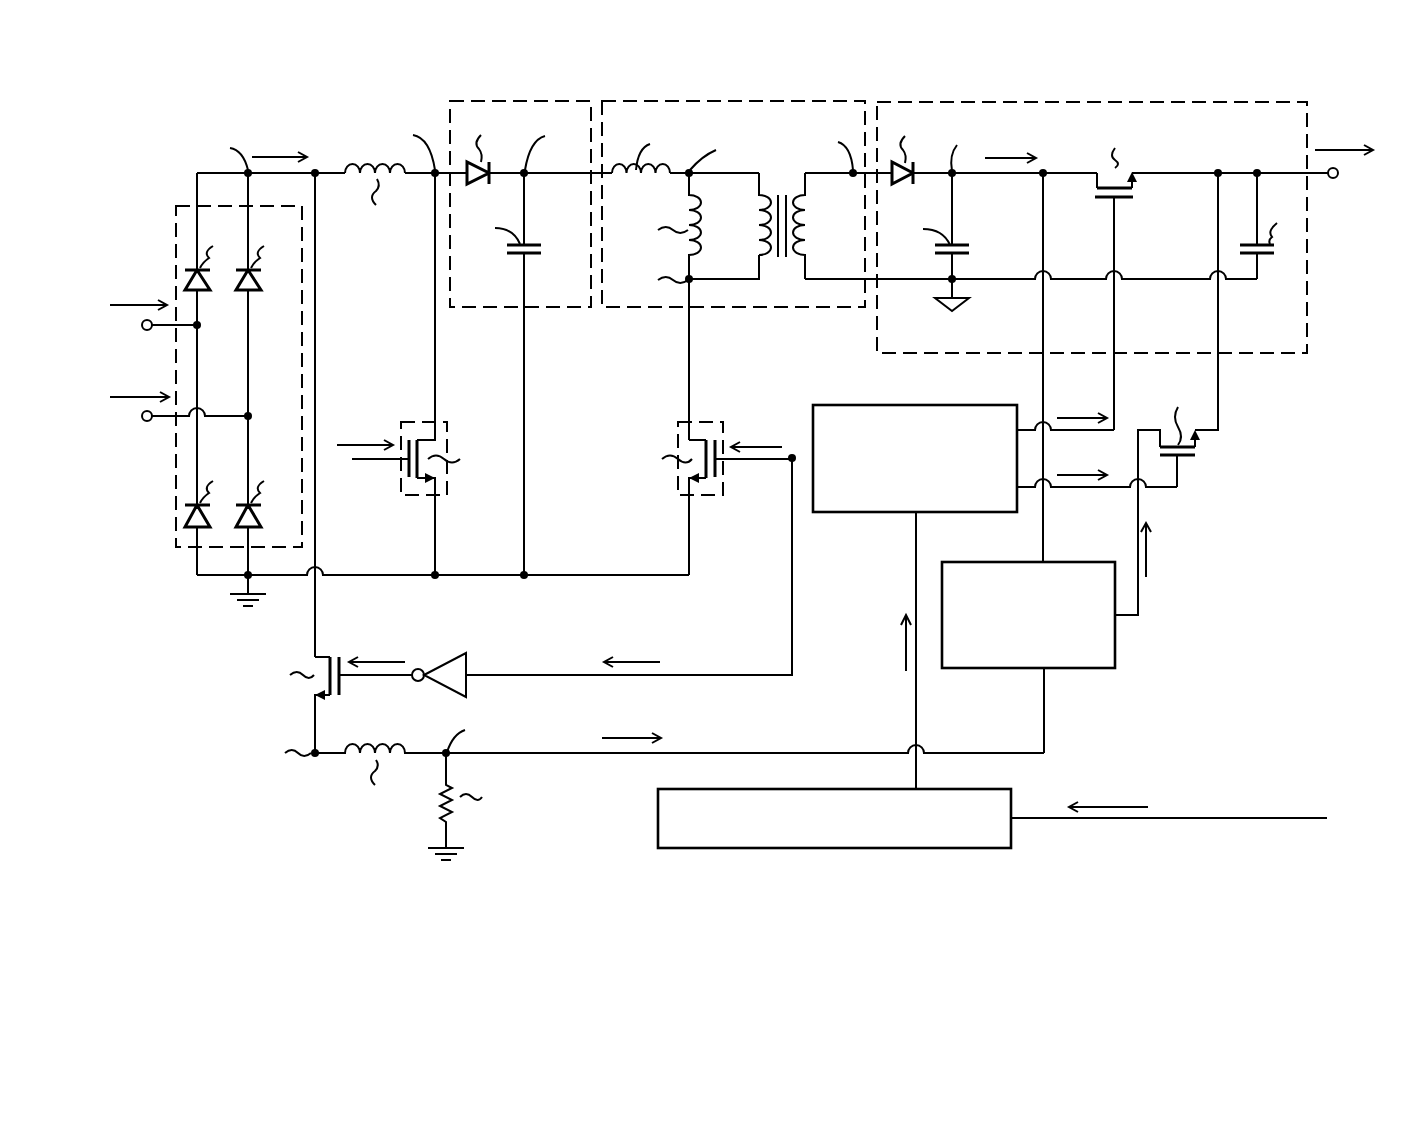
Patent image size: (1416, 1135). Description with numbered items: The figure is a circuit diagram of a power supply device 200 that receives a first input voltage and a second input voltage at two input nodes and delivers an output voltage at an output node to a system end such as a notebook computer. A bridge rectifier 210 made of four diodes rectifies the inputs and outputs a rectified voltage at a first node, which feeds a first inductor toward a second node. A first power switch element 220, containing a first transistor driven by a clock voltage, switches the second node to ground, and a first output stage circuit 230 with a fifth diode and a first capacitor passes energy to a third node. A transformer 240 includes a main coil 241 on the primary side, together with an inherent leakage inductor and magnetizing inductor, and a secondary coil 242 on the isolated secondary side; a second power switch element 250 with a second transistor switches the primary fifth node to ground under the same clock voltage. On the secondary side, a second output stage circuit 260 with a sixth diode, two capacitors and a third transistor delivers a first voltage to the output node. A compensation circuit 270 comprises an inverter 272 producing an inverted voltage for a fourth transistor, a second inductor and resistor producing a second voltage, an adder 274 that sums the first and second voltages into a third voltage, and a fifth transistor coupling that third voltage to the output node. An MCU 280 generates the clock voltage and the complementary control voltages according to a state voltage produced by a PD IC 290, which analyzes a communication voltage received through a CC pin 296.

The power supply device 200 is at (118, 87).
The bridge rectifier 210 is at (176, 232).
The first power switch element 220 is at (424, 420).
The first output stage circuit 230 is at (455, 97).
The transformer 240 is at (607, 97).
The main coil 241 is at (760, 240).
The secondary coil 242 is at (805, 240).
The second power switch element 250 is at (700, 420).
The second output stage circuit 260 is at (880, 97).
The compensation circuit 270 is at (371, 849).
The inverter 272 is at (435, 666).
The adder 274 is at (944, 562).
The MCU 280 is at (815, 404).
The PD IC 290 is at (658, 818).
The CC pin 296 is at (1205, 818).